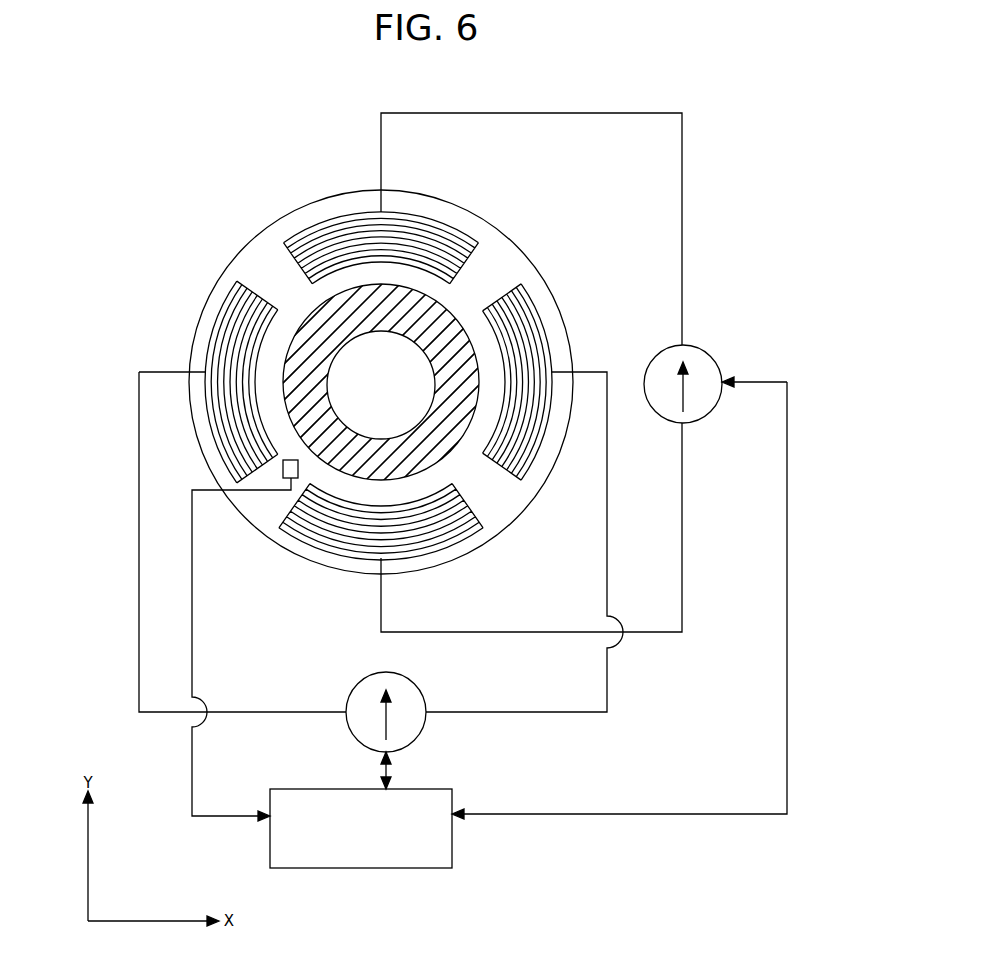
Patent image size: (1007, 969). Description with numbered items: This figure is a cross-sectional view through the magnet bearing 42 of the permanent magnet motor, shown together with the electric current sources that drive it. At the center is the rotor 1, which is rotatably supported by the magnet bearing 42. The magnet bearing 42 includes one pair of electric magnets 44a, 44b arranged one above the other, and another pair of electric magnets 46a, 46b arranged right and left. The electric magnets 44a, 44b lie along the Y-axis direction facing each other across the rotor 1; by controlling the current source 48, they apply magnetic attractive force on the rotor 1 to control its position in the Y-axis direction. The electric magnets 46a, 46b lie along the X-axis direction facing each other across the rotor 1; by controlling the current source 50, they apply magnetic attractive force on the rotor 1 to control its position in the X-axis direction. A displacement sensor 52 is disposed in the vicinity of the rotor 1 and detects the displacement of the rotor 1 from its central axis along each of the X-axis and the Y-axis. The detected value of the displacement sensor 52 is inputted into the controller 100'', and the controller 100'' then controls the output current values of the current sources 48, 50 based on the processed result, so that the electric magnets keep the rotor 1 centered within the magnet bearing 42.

The rotor 1 is at (303, 318).
The magnet bearing 42 is at (519, 236).
The electric magnet 44a is at (328, 218).
The electric magnet 44b is at (418, 560).
The electric magnet 46a is at (208, 345).
The electric magnet 46b is at (552, 332).
The current source 48 is at (715, 412).
The current source 50 is at (422, 730).
The displacement sensor 52 is at (283, 469).
The controller 100'' is at (394, 842).